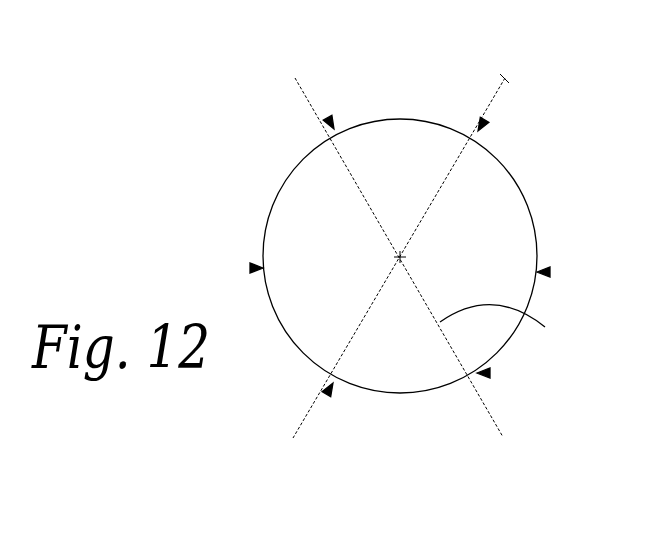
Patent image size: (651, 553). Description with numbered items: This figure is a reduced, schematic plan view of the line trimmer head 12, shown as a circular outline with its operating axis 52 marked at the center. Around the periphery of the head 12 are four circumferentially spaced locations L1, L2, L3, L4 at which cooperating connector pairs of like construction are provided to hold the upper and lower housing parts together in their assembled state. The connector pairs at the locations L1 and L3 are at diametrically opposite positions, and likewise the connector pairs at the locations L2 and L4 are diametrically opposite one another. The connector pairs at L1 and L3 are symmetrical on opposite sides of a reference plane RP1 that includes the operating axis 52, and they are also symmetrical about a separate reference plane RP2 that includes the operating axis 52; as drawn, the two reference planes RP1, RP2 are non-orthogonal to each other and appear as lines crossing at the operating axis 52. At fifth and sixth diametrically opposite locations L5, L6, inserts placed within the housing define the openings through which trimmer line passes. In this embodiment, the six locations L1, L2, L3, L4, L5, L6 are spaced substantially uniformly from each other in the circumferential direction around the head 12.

The line trimmer head 12 is at (283, 341).
The operating axis 52 is at (402, 256).
The first location L1 is at (338, 398).
The second location L2 is at (488, 373).
The third location L3 is at (482, 129).
The fourth location L4 is at (336, 122).
The fifth location L5 is at (547, 271).
The sixth location L6 is at (252, 267).
The reference plane RP1 is at (512, 325).
The separate reference plane RP2 is at (497, 84).